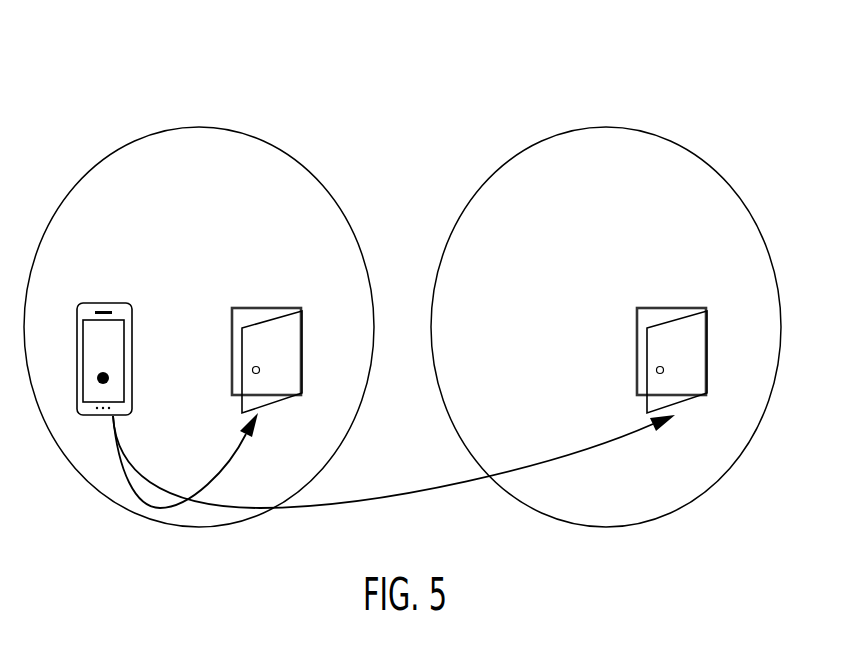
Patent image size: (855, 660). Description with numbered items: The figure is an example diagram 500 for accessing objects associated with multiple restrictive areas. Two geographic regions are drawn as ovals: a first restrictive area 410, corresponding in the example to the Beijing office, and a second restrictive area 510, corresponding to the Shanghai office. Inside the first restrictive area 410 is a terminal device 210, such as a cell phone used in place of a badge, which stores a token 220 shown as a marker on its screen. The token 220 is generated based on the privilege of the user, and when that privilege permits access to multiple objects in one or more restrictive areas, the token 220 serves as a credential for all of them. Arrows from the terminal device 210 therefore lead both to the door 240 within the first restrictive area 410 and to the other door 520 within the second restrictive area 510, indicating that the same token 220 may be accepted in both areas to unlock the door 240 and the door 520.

The example diagram 500 is at (270, 70).
The restrictive area 410 is at (285, 153).
The restrictive area 510 is at (690, 153).
The terminal device 210 is at (100, 304).
The token 220 is at (107, 370).
The door 240 is at (257, 306).
The door 520 is at (662, 307).